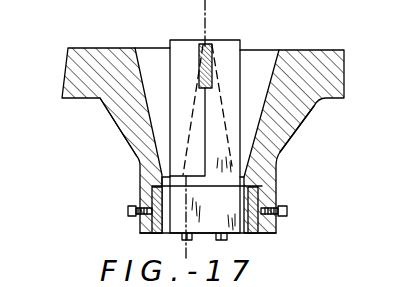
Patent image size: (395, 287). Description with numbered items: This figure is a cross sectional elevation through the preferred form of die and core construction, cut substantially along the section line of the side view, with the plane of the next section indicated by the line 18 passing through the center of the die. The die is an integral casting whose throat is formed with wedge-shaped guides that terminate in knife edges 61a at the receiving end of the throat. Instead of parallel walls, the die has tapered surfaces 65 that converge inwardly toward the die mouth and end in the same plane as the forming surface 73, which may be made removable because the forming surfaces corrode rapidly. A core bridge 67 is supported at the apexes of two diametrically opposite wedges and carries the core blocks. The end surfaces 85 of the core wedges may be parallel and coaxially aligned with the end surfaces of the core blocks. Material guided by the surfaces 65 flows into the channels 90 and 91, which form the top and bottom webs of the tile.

The section line 18 is at (206, 3).
The knife edge 61a is at (290, 50).
The tapered surface 65 is at (150, 115).
The core bridge 67 is at (208, 42).
The forming surface 73 is at (133, 213).
The end surface of core wedge 85 is at (170, 62).
The channel 90 is at (150, 235).
The channel 91 is at (242, 230).